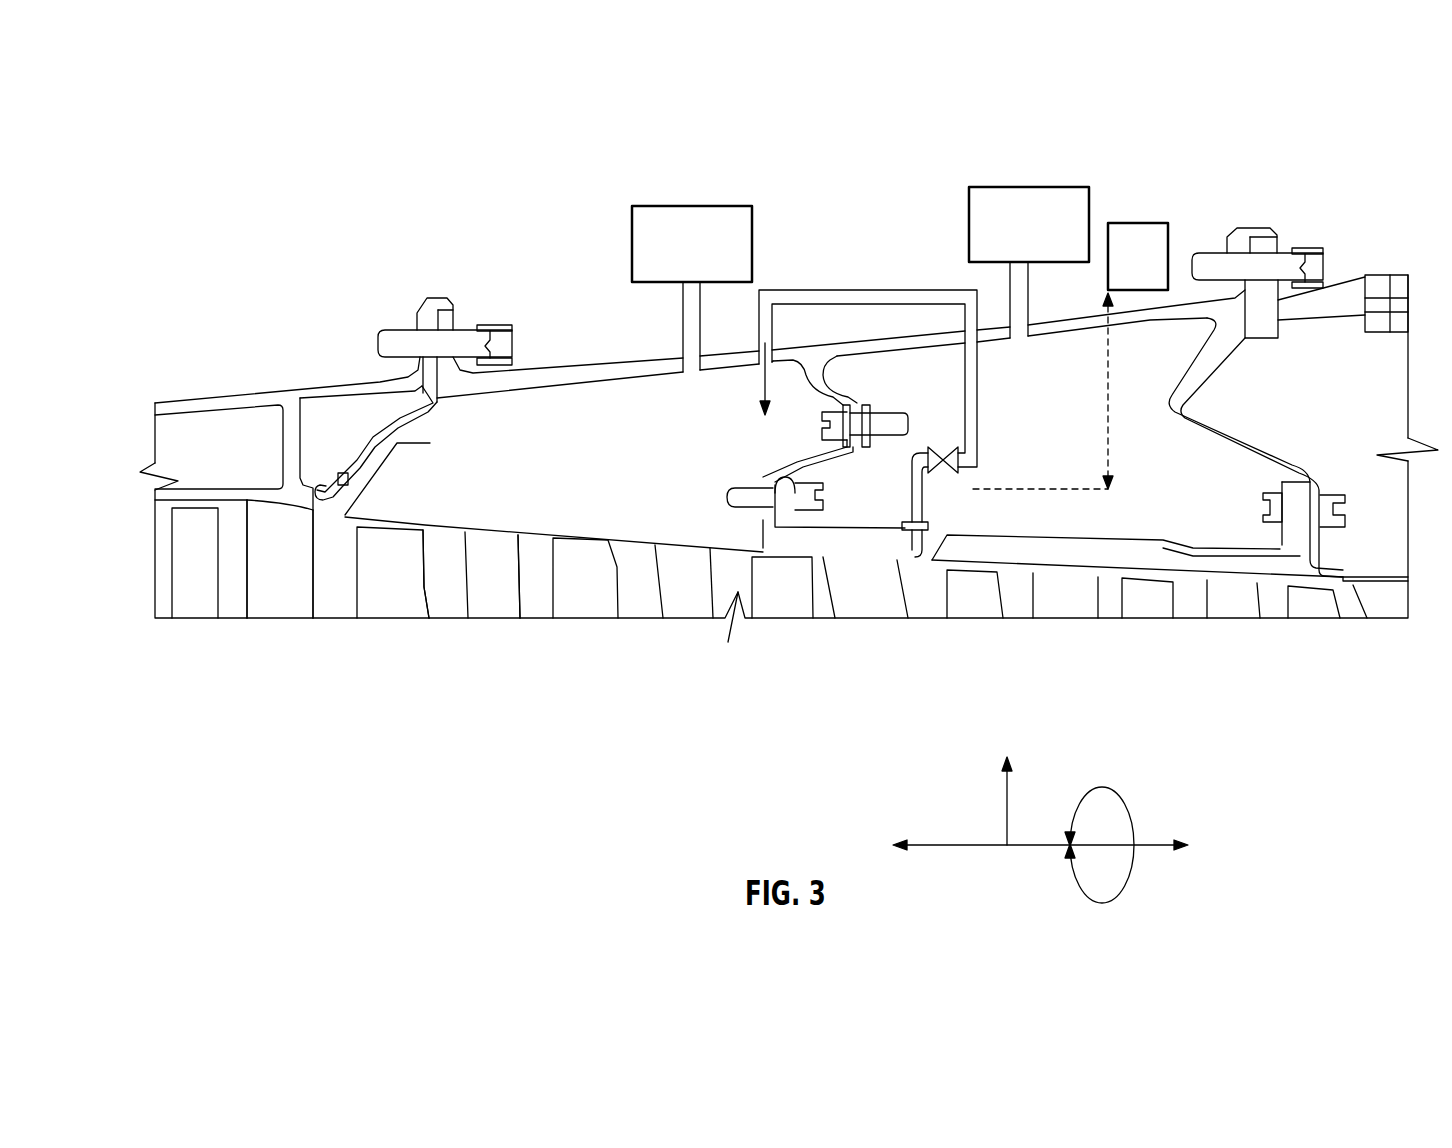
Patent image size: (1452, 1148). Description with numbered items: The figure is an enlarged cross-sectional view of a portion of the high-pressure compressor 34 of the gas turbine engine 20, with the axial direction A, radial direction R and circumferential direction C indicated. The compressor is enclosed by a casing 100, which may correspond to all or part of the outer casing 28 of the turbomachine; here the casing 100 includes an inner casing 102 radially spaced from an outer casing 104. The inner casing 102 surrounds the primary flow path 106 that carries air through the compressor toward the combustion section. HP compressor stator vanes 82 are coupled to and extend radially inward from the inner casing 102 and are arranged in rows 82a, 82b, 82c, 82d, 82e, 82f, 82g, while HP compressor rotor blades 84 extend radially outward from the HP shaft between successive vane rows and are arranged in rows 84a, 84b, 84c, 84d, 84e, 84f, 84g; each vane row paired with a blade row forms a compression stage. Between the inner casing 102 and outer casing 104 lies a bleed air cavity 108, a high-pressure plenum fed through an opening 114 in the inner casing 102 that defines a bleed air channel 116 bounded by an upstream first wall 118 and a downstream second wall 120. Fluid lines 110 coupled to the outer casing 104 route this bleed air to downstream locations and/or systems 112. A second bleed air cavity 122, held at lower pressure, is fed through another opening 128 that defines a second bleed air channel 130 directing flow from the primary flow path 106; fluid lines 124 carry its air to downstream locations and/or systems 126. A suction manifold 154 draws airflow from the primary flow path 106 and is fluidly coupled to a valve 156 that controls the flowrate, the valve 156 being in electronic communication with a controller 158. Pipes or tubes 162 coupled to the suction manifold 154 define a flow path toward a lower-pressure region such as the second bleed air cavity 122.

The gas turbine engine 20 is at (343, 138).
The high-pressure compressor 34 is at (528, 212).
The outer casing 28 is at (495, 326).
The casing 100 is at (580, 343).
The second bleed air channel 130 is at (407, 431).
The primary flow path 106 is at (329, 612).
The opening 128 is at (330, 528).
The row of HP compressor rotor blades 84a is at (195, 600).
The row of HP compressor rotor blades 84b is at (389, 600).
The HP compressor rotor blades 84 is at (417, 603).
The row of HP compressor rotor blades 84c is at (592, 603).
The row of HP compressor rotor blades 84d is at (785, 605).
The row of HP compressor rotor blades 84e is at (978, 605).
The row of HP compressor rotor blades 84f is at (1152, 607).
The row of HP compressor rotor blades 84g is at (1315, 607).
The row of HP compressor stator vanes 82a is at (271, 595).
The row of HP compressor stator vanes 82b is at (490, 595).
The HP compressor stator vanes 82 is at (508, 600).
The row of HP compressor stator vanes 82c is at (686, 603).
The row of HP compressor stator vanes 82d is at (870, 595).
The row of HP compressor stator vanes 82e is at (1068, 603).
The row of HP compressor stator vanes 82f is at (1238, 605).
The row of HP compressor stator vanes 82g is at (1394, 610).
The opening 114 is at (922, 584).
The bleed air channel 116 is at (942, 537).
The second wall 120 is at (937, 553).
The inner casing 102 is at (1194, 555).
The bleed air cavity 108 is at (1202, 486).
The second bleed air cavity 122 is at (682, 447).
The downstream locations and/or systems 126 is at (710, 258).
The fluid lines 124 is at (683, 325).
The outer casing 104 is at (827, 347).
The valve 156 is at (940, 447).
The suction manifold 154 is at (907, 520).
The first wall 118 is at (907, 542).
The downstream locations and/or systems 112 is at (1045, 246).
The fluid lines 110 is at (1021, 304).
The controller 158 is at (1153, 276).
The pipes or tubes 162 is at (974, 484).
The axial direction A is at (978, 847).
The radial direction R is at (1007, 800).
The circumferential direction C is at (1099, 834).